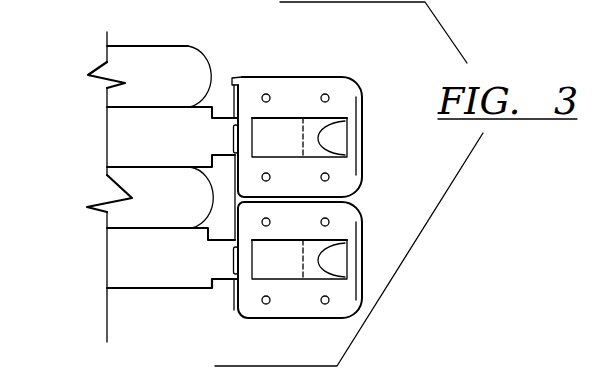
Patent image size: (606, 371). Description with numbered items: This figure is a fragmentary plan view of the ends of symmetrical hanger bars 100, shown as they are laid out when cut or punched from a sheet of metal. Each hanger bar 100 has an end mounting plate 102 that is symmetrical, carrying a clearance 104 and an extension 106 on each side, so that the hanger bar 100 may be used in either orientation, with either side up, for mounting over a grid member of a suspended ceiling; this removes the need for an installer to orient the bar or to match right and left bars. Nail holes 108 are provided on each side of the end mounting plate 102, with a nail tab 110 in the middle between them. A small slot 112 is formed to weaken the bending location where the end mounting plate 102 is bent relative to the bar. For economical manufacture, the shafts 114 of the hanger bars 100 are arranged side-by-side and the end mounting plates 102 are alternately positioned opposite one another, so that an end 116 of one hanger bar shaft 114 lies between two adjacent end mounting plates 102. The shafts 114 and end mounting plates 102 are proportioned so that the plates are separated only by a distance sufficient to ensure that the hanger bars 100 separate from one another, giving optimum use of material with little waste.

The symmetrical hanger bar 100 is at (153, 266).
The end mounting plate 102 is at (323, 77).
The clearance 104 is at (231, 100).
The extension 106 is at (237, 77).
The nail holes 108 is at (330, 99).
The nail tab 110 is at (313, 156).
The small slot 112 is at (232, 137).
The shaft 114 is at (147, 62).
The end of hanger bar shaft 116 is at (219, 242).